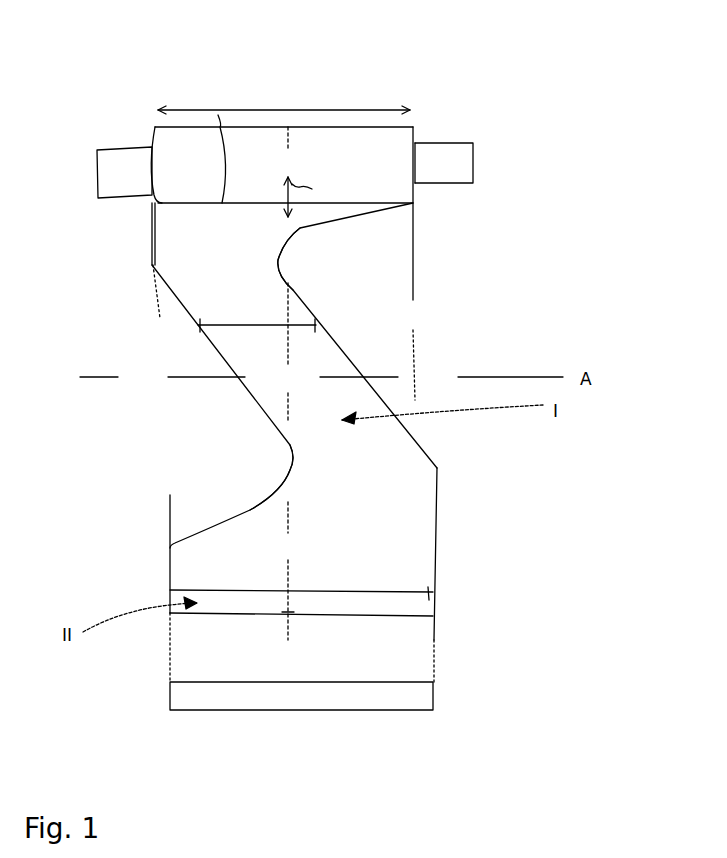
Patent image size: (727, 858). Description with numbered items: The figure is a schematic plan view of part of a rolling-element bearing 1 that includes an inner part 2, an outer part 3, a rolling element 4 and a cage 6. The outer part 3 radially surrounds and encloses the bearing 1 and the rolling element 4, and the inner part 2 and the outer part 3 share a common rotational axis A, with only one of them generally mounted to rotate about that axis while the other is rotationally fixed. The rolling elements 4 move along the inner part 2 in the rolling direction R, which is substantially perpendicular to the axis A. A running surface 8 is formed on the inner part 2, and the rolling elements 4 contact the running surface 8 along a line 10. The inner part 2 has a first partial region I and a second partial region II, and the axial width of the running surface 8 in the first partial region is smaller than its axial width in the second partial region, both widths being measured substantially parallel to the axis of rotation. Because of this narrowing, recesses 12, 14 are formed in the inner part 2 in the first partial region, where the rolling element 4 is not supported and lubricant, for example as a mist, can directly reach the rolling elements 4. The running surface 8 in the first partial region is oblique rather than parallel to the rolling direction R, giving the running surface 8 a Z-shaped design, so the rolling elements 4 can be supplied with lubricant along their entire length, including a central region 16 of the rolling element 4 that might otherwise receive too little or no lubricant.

The rolling-element bearing 1 is at (238, 60).
The inner part 2 is at (418, 542).
The outer part 3 is at (435, 693).
The rolling element 4 is at (380, 147).
The cage 6 is at (462, 163).
The running surface 8 is at (203, 247).
The line 10 is at (218, 115).
The recess 12 is at (345, 270).
The recess 14 is at (247, 458).
The central region 16 is at (298, 142).